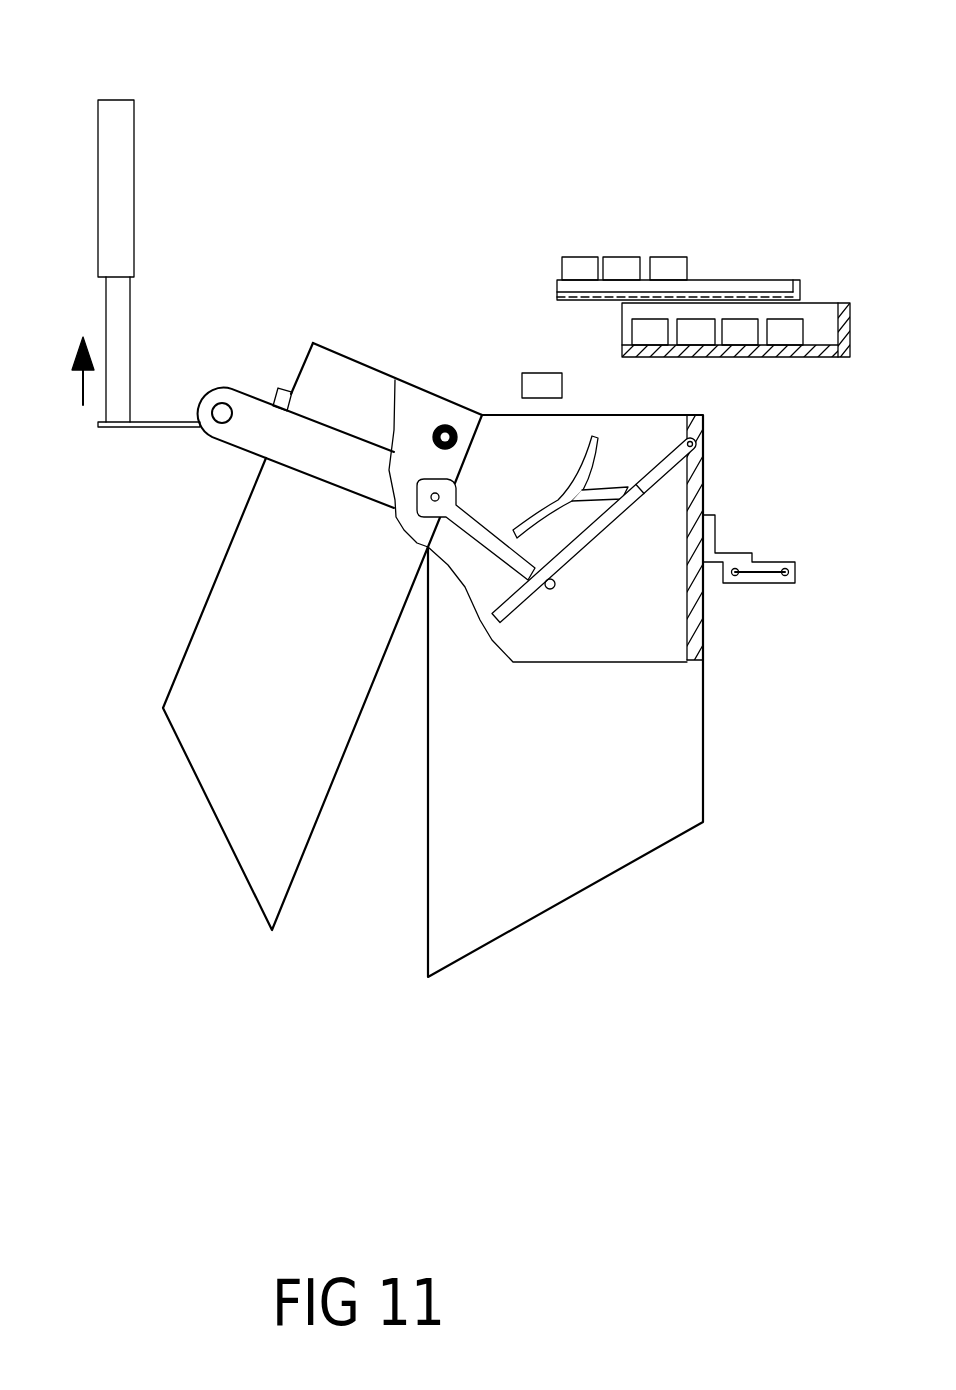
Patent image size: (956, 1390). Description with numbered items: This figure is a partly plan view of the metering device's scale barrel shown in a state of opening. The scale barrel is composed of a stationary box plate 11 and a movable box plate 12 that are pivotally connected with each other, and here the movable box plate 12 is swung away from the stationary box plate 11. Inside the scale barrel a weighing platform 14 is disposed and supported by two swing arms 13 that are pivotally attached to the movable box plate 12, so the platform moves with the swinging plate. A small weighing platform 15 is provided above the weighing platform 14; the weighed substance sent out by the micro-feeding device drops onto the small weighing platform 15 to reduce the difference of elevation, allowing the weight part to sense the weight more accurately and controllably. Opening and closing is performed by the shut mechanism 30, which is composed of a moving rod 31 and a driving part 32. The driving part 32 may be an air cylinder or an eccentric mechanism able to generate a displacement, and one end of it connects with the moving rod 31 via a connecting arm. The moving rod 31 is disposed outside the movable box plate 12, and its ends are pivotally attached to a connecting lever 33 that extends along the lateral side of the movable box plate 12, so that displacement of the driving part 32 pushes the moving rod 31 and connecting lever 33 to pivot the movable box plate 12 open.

The stationary box plate 11 is at (628, 712).
The movable box plate 12 is at (213, 678).
The swing arms 13 is at (451, 507).
The weighing platform 14 is at (582, 543).
The small weighing platform 15 is at (593, 462).
The shut mechanism 30 is at (233, 276).
The moving rod 31 is at (207, 430).
The driving part 32 is at (108, 133).
The connecting lever 33 is at (265, 445).